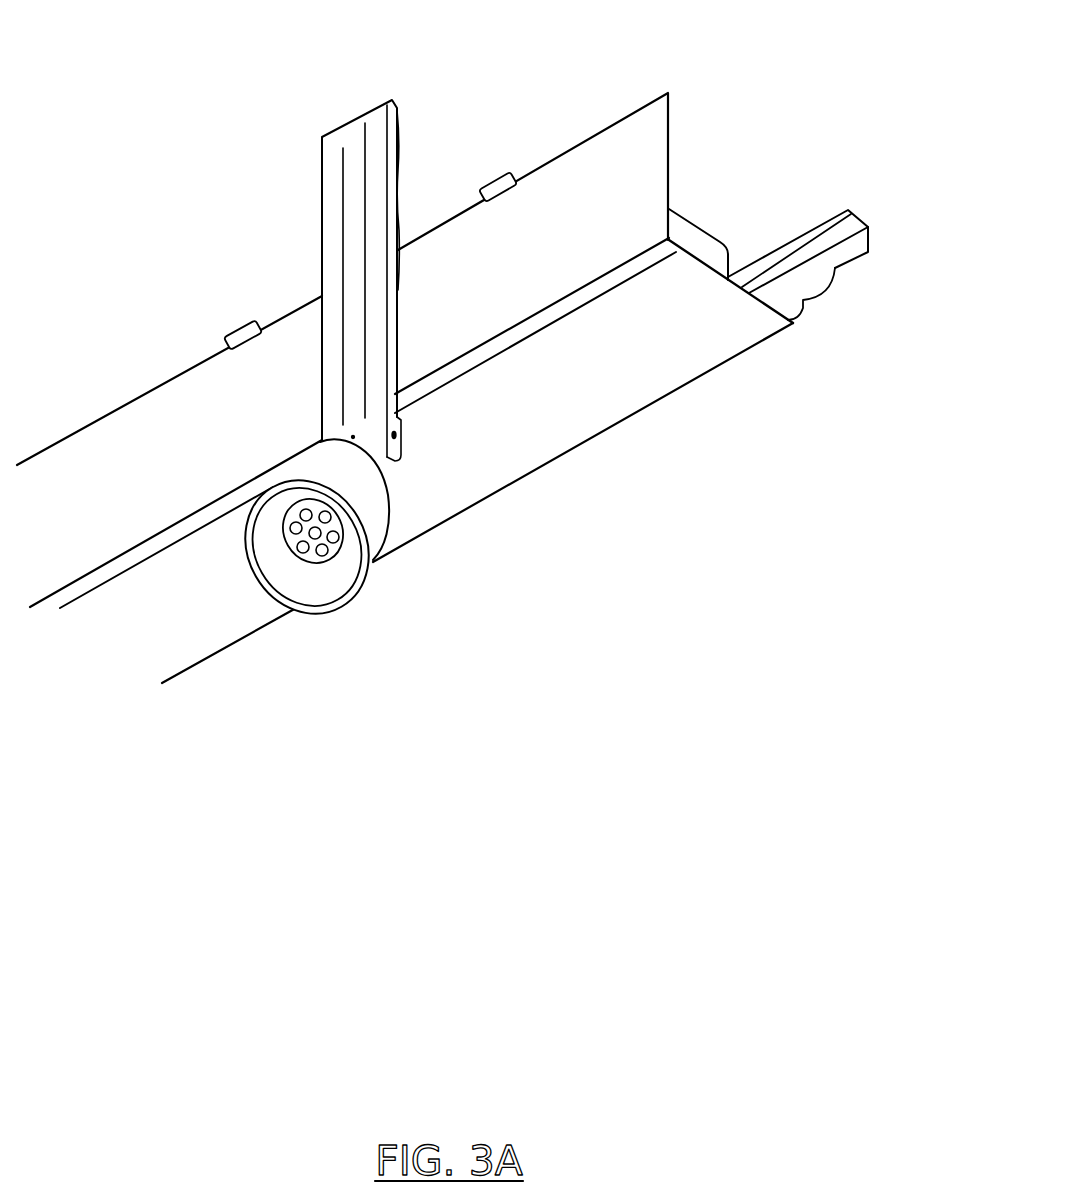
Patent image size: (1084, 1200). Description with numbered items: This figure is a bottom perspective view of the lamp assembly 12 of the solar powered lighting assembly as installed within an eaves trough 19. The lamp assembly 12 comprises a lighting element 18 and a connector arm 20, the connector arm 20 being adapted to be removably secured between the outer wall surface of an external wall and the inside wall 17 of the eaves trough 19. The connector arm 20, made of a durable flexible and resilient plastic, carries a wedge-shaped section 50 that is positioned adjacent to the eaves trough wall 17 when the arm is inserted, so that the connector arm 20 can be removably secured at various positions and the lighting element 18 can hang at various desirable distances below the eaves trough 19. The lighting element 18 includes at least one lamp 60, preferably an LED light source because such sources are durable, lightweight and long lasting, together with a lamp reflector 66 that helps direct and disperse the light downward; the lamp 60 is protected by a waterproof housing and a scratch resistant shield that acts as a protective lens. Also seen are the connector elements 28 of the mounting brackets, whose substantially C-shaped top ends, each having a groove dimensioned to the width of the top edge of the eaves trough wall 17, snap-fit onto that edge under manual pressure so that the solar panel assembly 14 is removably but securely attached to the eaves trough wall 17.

The lamp assembly 12 is at (225, 203).
The solar panel assembly 14 is at (695, 240).
The inside wall of eaves trough 17 is at (612, 170).
The lighting element 18 is at (372, 492).
The eaves trough 19 is at (592, 380).
The connector arm 20 is at (357, 145).
The connector element 28 is at (240, 328).
The wedge-shaped section 50 is at (395, 228).
The lamp 60 is at (305, 548).
The lamp reflector 66 is at (318, 590).